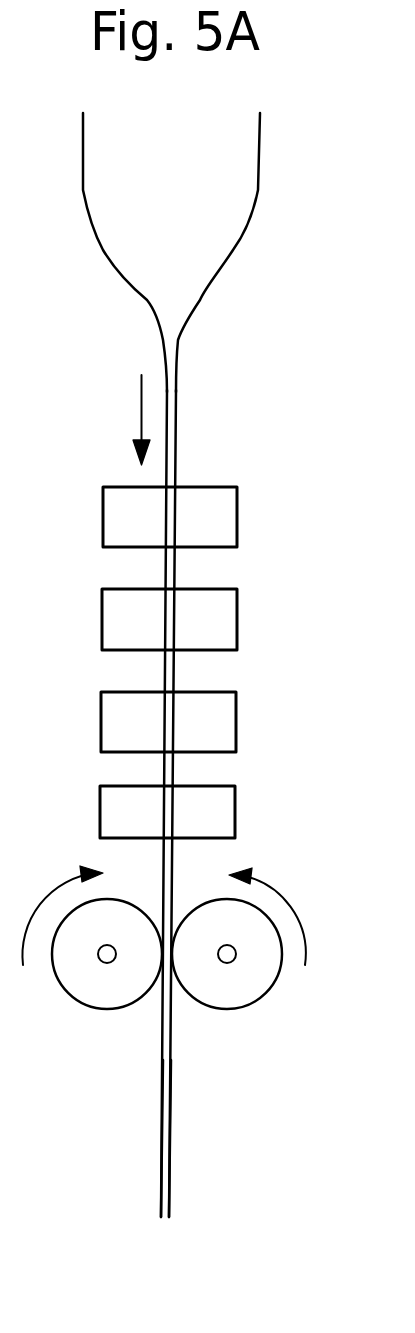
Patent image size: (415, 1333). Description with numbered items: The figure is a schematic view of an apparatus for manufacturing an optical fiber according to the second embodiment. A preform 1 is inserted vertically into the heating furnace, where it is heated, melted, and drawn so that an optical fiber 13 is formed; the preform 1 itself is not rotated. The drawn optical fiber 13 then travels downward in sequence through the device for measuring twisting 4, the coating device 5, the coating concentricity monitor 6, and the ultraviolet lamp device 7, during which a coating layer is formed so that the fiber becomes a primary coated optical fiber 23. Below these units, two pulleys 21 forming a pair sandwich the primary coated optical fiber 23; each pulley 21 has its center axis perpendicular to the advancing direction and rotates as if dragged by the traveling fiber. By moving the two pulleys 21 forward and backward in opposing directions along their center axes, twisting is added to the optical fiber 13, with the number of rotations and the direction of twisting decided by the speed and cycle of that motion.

The preform 1 is at (198, 174).
The optical fiber 13 is at (176, 427).
The device for measuring twisting 4 is at (237, 512).
The coating device 5 is at (237, 620).
The coating concentricity monitor 6 is at (236, 722).
The ultraviolet lamp device 7 is at (235, 812).
The pulley for imparting twisting 21 is at (272, 973).
The primary coated optical fiber 23 is at (170, 1090).